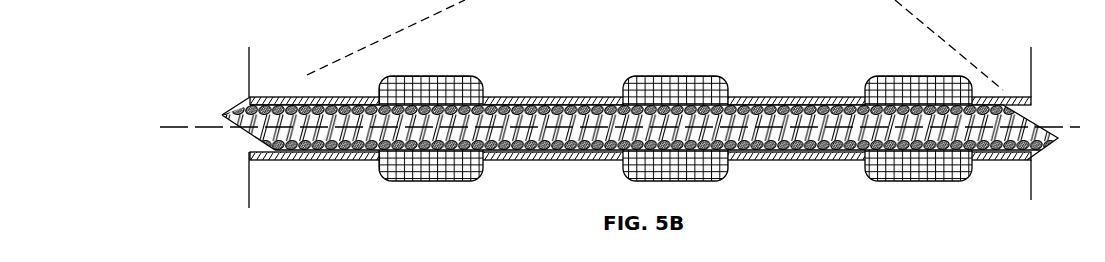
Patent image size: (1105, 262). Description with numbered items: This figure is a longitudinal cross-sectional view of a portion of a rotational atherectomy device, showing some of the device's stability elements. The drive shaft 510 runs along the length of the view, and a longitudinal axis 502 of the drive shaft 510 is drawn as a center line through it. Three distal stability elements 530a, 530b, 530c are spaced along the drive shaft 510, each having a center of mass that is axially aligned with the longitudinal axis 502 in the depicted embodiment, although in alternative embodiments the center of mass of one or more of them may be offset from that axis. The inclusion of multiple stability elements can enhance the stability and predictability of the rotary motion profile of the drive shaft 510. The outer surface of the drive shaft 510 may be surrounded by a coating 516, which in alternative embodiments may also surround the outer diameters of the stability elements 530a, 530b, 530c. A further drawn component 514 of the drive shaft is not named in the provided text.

The longitudinal axis 502 is at (209, 128).
The drive shaft 510 is at (303, 96).
The helical coil 514 is at (603, 107).
The coating 516 is at (743, 97).
The distal stability element 530a is at (420, 77).
The distal stability element 530b is at (685, 75).
The distal stability element 530c is at (905, 75).